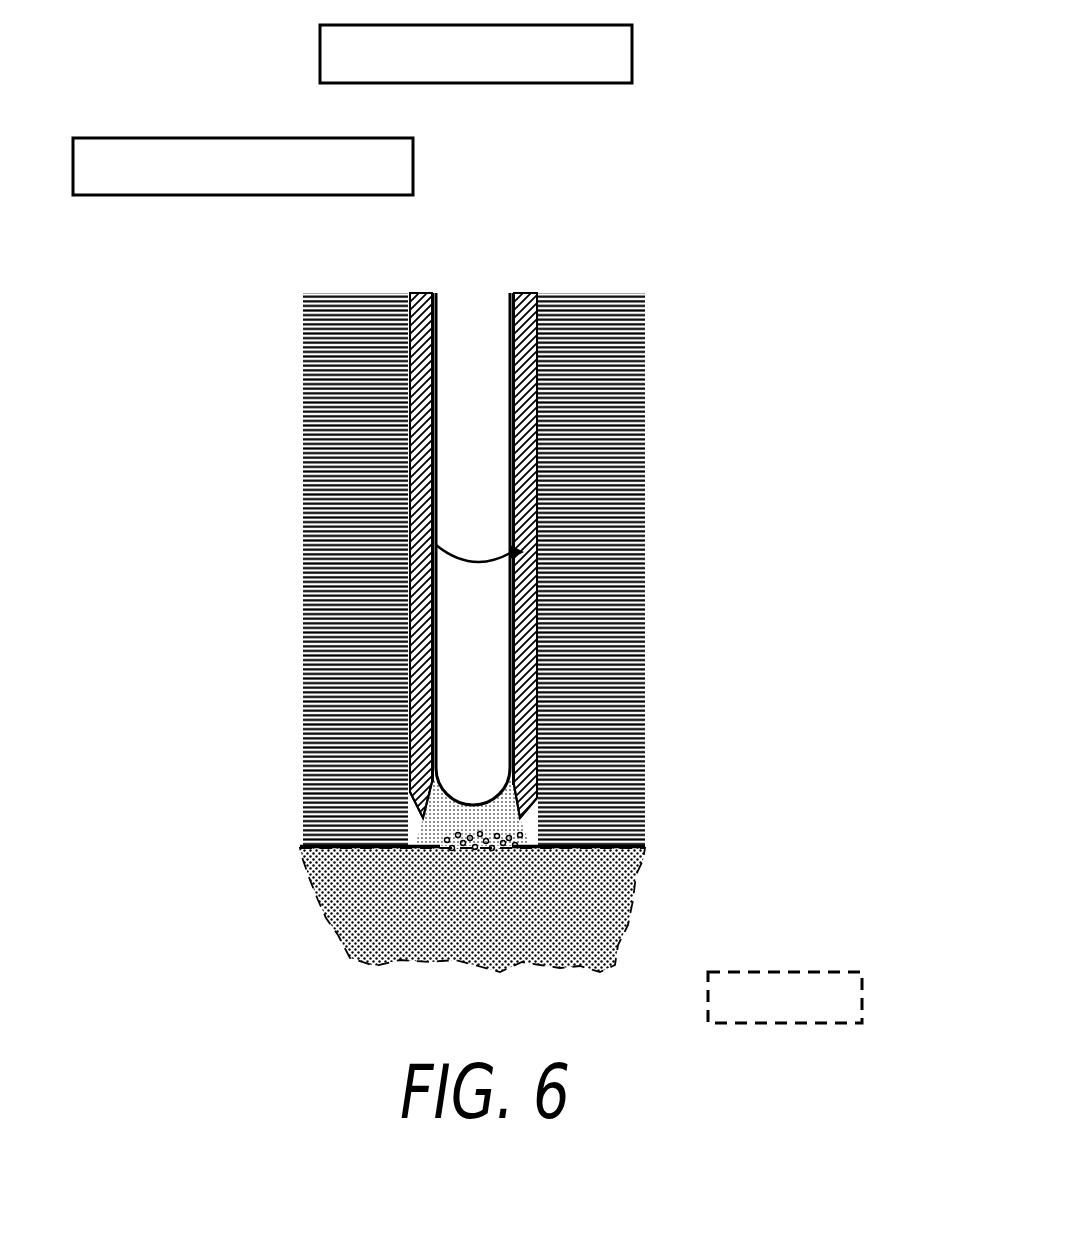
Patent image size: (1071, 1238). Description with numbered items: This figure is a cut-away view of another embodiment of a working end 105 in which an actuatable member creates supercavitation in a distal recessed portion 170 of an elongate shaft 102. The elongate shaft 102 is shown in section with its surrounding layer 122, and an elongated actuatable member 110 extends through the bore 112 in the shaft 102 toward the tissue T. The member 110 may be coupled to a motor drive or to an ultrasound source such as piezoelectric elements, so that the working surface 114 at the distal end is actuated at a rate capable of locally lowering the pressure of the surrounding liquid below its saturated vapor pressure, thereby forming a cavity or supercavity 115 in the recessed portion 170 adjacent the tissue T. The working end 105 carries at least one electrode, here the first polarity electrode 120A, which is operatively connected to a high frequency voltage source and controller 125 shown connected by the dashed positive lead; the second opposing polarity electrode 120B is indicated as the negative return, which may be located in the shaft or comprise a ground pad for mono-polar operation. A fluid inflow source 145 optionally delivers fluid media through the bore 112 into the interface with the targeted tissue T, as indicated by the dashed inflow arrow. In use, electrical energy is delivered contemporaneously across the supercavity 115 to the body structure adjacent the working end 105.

The elongated shaft or sleeve member 102 is at (538, 311).
The actuatable working end 105 is at (710, 178).
The elongated rotatable member 110 is at (487, 648).
The bore 112 is at (420, 400).
The working surface 114 is at (462, 782).
The cavity or supercavity 115 is at (495, 822).
The first polarity electrode 120A is at (492, 777).
The second opposing polarity electrode 120B is at (708, 1002).
The outer insulating layer 122 is at (612, 393).
The high frequency voltage source and controller 125 is at (457, 325).
The fluid source 145 is at (433, 278).
The distal recessed portion 170 is at (443, 838).
The tissue T is at (337, 888).